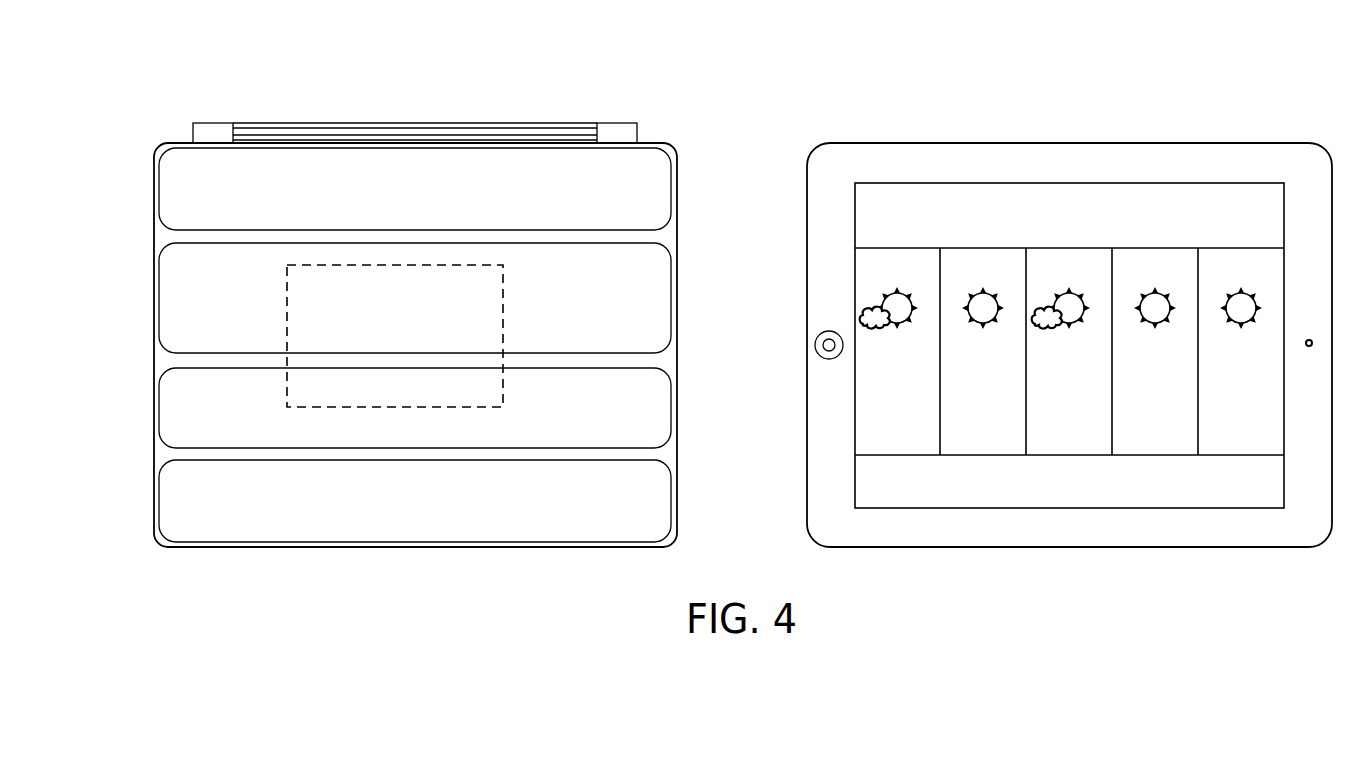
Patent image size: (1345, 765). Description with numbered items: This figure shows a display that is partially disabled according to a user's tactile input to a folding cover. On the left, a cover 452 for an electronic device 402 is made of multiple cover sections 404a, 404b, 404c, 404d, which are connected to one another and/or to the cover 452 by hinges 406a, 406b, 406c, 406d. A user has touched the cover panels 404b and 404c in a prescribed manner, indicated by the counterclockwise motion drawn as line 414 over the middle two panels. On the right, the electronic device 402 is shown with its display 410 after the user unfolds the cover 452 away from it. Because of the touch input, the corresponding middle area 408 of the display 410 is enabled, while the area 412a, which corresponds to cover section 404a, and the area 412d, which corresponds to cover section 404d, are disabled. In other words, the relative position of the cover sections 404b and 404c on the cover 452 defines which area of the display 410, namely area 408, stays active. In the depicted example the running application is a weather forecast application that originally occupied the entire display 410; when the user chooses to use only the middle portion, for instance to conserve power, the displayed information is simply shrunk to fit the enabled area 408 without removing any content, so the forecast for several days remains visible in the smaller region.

The electronic device 402 is at (1069, 291).
The cover section 404a is at (415, 501).
The cover section 404b is at (415, 408).
The cover section 404c is at (415, 298).
The cover section 404d is at (415, 189).
The hinge 406a is at (123, 414).
The hinge 406b is at (123, 320).
The hinge 406c is at (123, 197).
The hinge 406d is at (376, 103).
The middle area 408 is at (1070, 395).
The display 410 is at (1069, 282).
The area 412a is at (1069, 476).
The area 412d is at (1069, 226).
The line 414 is at (386, 382).
The cover 452 is at (445, 307).